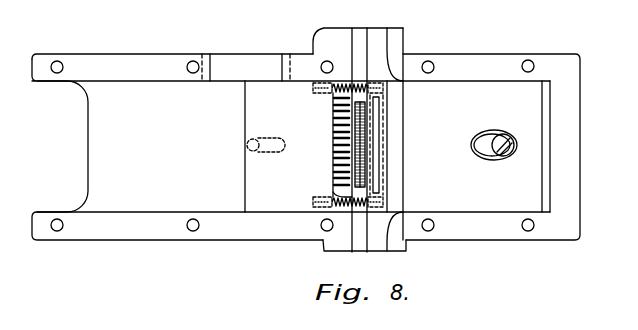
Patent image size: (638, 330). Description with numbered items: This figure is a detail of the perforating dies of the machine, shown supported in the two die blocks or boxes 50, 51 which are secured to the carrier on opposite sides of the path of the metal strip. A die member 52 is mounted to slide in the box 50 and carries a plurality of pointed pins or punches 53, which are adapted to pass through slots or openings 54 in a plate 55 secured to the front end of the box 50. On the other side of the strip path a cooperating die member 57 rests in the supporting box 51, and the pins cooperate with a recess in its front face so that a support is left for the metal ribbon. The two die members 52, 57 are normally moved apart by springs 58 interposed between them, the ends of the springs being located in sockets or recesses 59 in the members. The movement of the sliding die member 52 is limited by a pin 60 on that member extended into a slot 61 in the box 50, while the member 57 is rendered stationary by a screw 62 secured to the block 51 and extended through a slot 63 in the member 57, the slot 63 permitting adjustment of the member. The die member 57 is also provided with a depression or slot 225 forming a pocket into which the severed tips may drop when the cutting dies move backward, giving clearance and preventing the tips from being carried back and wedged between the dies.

The die block or box 50 is at (147, 92).
The die block or box 51 is at (478, 54).
The die member 52 is at (247, 188).
The pointed pins or punches 53 is at (333, 147).
The slots or openings 54 is at (358, 147).
The plate 55 is at (334, 184).
The die member 57 is at (498, 202).
The springs 58 is at (342, 92).
The sockets or recesses 59 is at (384, 202).
The pin 60 is at (258, 140).
The slot 61 is at (277, 150).
The screw 62 is at (504, 134).
The slot 63 is at (487, 136).
The depression or slot 225 is at (380, 162).